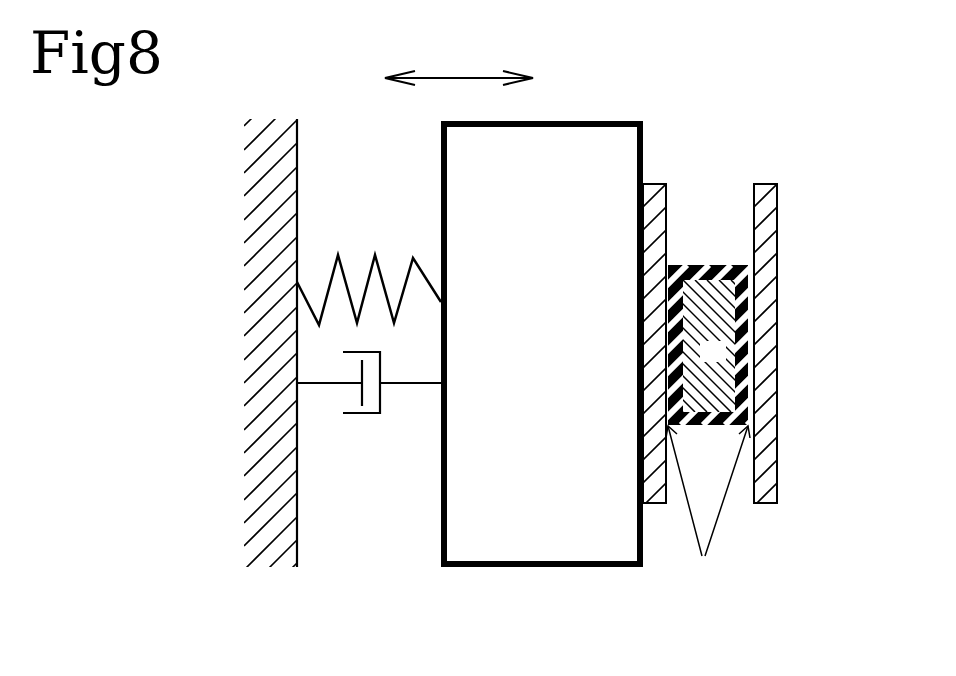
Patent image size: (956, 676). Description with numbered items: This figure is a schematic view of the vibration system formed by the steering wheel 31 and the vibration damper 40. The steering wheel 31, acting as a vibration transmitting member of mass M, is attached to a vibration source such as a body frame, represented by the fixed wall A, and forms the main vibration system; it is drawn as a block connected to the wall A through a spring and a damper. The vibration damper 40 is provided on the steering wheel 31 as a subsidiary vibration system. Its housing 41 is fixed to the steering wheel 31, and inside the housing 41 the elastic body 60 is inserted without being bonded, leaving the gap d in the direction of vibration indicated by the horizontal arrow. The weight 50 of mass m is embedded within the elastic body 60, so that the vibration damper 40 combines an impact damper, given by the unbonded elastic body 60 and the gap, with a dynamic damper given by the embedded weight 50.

The steering wheel 31 is at (537, 568).
The vibration damper 40 is at (706, 309).
The housing 41 is at (775, 262).
The weight 50 is at (706, 345).
The elastic body 60 is at (760, 323).
The fixed wall A is at (297, 519).